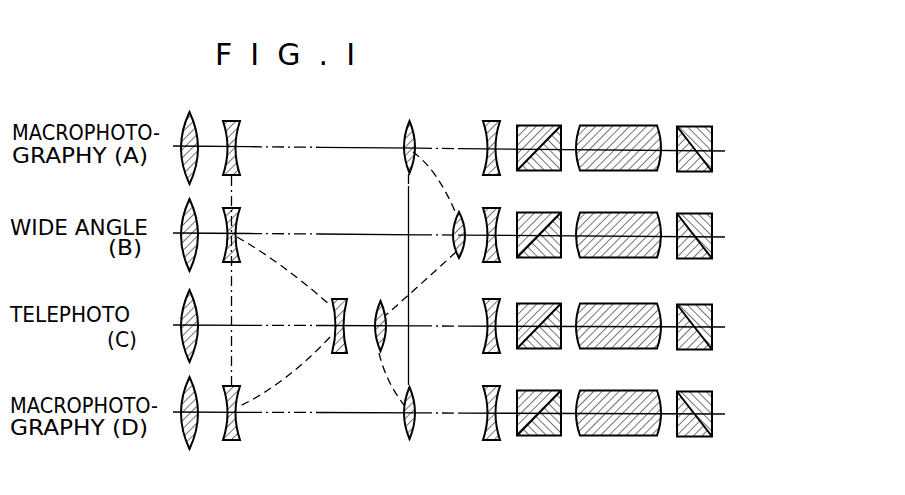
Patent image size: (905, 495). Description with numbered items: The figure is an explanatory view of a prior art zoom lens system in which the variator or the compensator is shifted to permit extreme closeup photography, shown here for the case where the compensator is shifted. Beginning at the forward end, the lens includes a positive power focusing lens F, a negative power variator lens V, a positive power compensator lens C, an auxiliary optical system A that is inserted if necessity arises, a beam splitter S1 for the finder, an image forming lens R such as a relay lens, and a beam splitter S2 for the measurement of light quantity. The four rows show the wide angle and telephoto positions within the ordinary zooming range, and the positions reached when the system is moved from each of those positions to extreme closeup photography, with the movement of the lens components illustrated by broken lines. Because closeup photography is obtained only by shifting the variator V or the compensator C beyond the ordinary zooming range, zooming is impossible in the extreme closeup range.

The focusing lens F is at (191, 114).
The variator lens V is at (231, 119).
The compensator lens C is at (410, 120).
The auxiliary optical system A is at (492, 121).
The beam splitter for the finder S1 is at (540, 125).
The image forming lens R is at (616, 126).
The beam splitter for the measurement of light quantity S2 is at (694, 126).